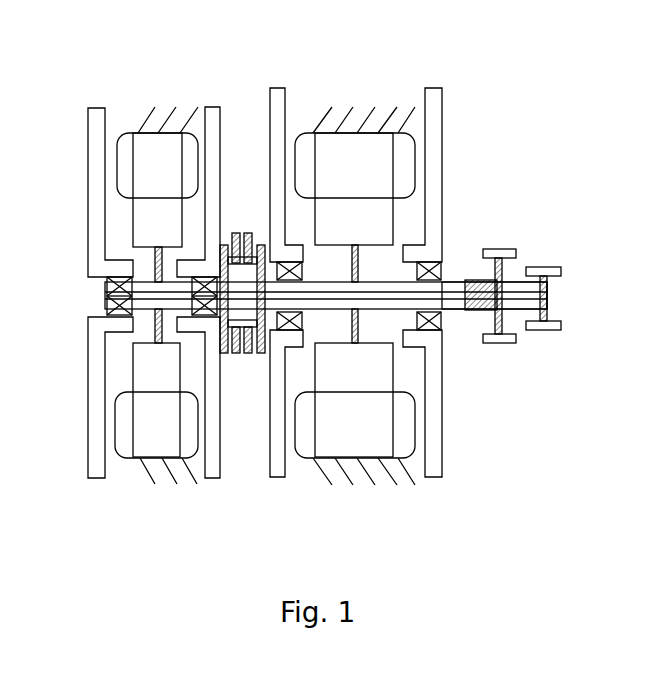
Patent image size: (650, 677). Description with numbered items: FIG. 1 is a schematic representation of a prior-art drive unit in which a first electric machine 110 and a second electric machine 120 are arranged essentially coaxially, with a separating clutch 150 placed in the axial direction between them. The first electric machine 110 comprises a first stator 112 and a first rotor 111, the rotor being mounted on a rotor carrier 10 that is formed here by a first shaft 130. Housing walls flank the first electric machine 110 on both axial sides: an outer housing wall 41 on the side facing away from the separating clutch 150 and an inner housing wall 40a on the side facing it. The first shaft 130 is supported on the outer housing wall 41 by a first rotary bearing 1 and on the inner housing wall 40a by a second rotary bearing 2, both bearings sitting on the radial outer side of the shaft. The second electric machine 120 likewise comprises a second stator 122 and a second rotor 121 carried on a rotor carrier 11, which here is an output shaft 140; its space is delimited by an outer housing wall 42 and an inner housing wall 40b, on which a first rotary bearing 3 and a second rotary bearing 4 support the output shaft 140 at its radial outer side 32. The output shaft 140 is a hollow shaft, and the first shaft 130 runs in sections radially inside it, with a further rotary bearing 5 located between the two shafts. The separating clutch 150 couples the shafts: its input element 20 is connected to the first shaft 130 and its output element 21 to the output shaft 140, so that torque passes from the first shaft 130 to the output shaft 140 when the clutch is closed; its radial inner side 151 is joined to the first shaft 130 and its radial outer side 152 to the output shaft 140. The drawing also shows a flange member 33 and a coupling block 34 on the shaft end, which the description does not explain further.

The first rotary bearing of the first electric machine 1 is at (107, 288).
The second rotary bearing of the first electric machine 2 is at (180, 285).
The first rotary bearing of the second electric machine 3 is at (305, 322).
The second rotary bearing of the second electric machine 4 is at (445, 318).
The rotary bearing of the output shaft 5 is at (512, 303).
The rotor carrier of the first electric machine 10 is at (127, 320).
The rotor carrier of the second electric machine 11 is at (442, 280).
The input element of the separating clutch 20 is at (246, 358).
The output element of the separating clutch 21 is at (226, 350).
The radial outer side 32 is at (107, 305).
The flange member 33 is at (517, 255).
The coupling block 34 is at (450, 278).
The inner housing wall 40a is at (213, 478).
The inner housing wall 40b is at (275, 477).
The outer housing wall 41 is at (92, 478).
The outer housing wall 42 is at (432, 477).
The first electric machine 110 is at (121, 99).
The first rotor 111 is at (145, 215).
The first stator 112 is at (128, 160).
The second electric machine 120 is at (360, 99).
The second rotor 121 is at (383, 213).
The second stator 122 is at (405, 153).
The first shaft 130 is at (70, 397).
The output shaft 140 is at (494, 255).
The separating clutch 150 is at (240, 212).
The radial inner side of the separating clutch 151 is at (222, 335).
The radial outer side of the separating clutch 152 is at (266, 250).